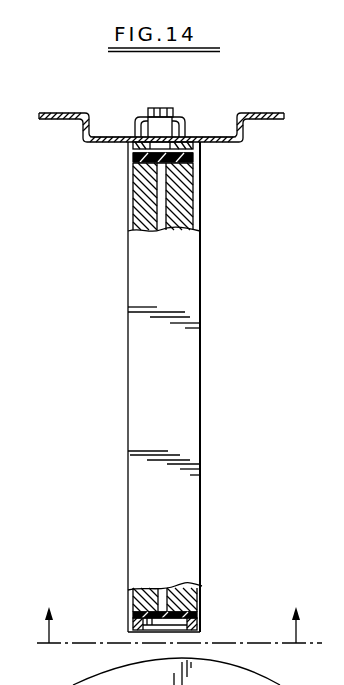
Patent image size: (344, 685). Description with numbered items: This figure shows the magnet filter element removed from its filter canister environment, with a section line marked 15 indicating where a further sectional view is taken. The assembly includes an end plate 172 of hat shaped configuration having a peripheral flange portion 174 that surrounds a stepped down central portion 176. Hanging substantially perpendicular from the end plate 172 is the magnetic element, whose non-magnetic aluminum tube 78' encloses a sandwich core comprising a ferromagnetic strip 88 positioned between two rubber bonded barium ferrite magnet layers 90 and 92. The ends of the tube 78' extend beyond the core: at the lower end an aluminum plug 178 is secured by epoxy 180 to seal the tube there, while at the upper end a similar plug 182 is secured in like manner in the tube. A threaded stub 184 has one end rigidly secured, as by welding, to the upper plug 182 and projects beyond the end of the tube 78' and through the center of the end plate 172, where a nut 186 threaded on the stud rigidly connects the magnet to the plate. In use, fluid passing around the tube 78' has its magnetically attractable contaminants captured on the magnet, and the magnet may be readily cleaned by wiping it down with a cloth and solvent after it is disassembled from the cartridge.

The non-magnetic aluminum tube 78' is at (192, 387).
The ferromagnetic strip 88 is at (160, 587).
The rubber bonded barium ferrite magnet layer 90 is at (183, 203).
The rubber bonded barium ferrite magnet layer 92 is at (140, 208).
The end plate 172 is at (83, 106).
The peripheral flange portion 174 is at (272, 112).
The stepped down central portion 176 is at (231, 143).
The aluminum plug 178 is at (178, 631).
The epoxy 180 is at (198, 612).
The plug 182 is at (133, 150).
The threaded stub 184 is at (162, 107).
The nut 186 is at (187, 118).
The section line 15- 15 is at (179, 614).